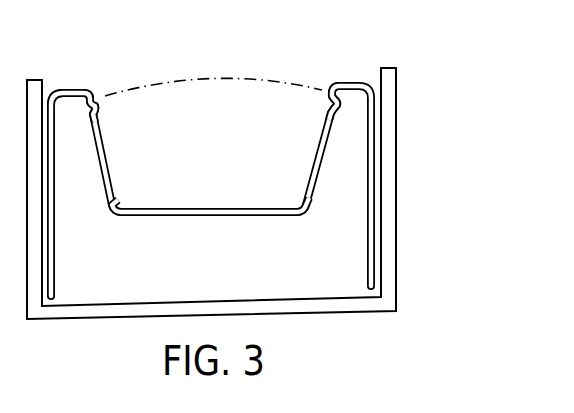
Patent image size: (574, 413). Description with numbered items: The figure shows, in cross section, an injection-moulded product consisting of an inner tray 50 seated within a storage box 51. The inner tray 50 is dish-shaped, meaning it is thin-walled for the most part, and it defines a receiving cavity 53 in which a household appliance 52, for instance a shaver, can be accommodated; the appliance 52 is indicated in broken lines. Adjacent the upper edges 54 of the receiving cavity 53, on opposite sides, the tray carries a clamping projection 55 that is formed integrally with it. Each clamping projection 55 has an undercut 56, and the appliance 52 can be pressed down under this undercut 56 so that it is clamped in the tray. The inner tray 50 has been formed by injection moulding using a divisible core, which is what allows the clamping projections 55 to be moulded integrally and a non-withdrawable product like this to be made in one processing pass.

The inner tray 50 is at (372, 199).
The storage box 51 is at (388, 125).
The household appliance 52 is at (177, 83).
The receiving cavity 53 is at (229, 150).
The upper edges 54 is at (77, 89).
The clamping projection 55 is at (95, 97).
The undercut 56 is at (322, 88).